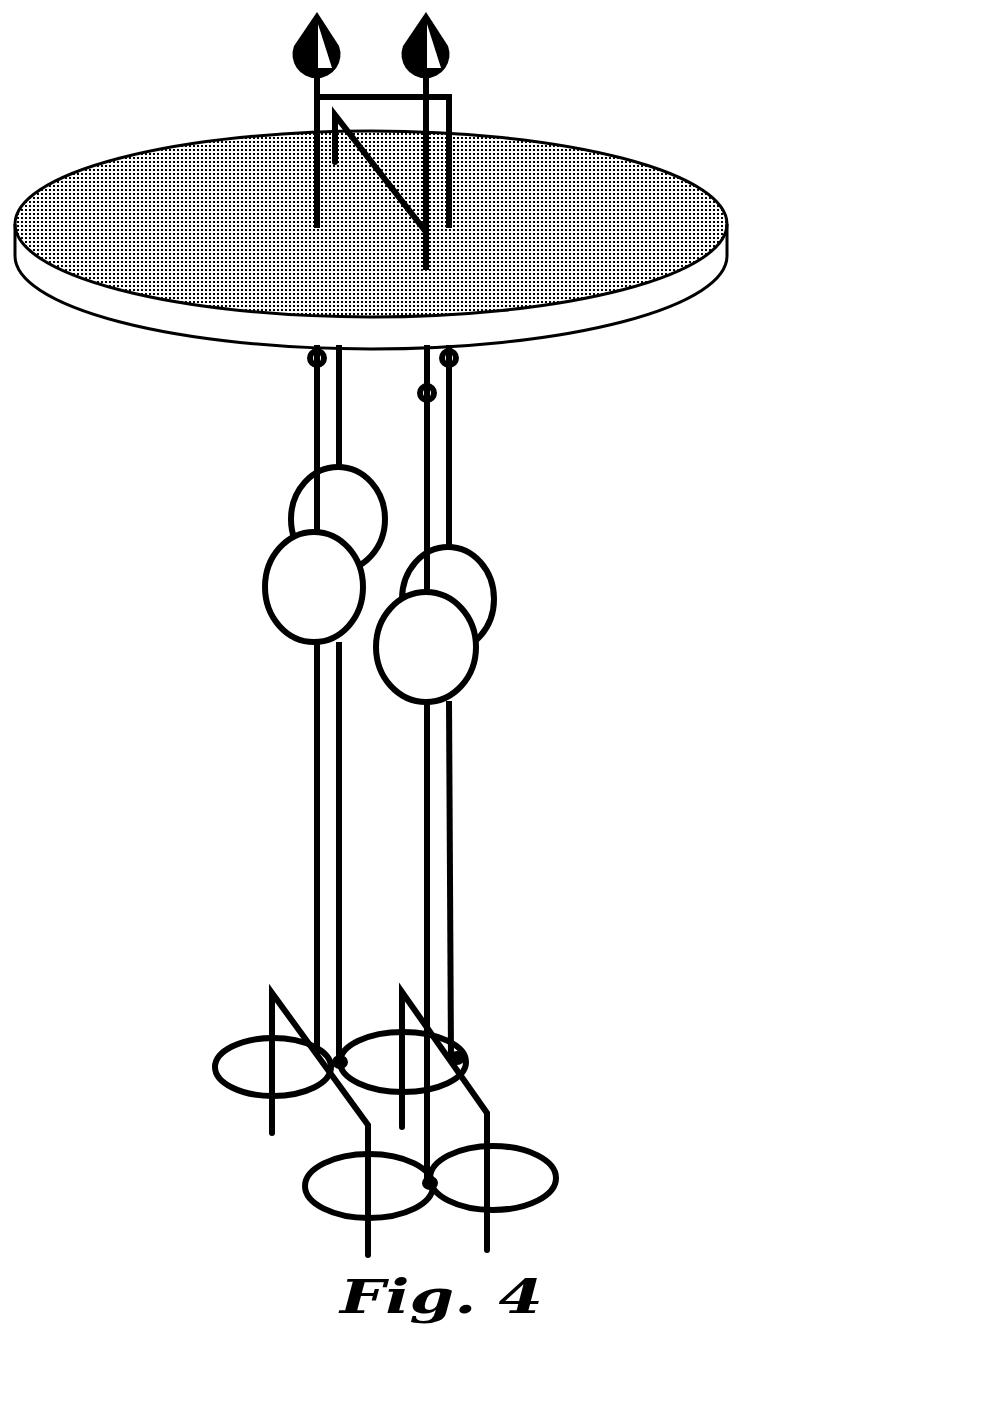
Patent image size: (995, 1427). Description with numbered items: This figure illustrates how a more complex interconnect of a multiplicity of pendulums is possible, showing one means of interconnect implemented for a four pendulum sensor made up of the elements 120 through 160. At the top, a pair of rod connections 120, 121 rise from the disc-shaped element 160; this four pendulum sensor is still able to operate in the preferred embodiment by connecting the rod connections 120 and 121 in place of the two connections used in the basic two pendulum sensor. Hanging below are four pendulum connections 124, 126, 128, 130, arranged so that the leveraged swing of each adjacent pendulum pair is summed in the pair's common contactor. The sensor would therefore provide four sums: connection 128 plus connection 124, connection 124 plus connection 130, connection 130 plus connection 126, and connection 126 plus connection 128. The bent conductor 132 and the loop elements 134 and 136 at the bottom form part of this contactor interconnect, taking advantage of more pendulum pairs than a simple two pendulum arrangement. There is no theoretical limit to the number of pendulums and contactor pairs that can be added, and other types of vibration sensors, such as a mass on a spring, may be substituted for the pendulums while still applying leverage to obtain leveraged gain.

The rod connection 120 is at (283, 62).
The rod connection 121 is at (455, 64).
The interconnect element 160 is at (733, 247).
The pendulum connection 124 is at (308, 787).
The pendulum connection 126 is at (462, 781).
The pendulum connection 128 is at (330, 899).
The pendulum connection 130 is at (435, 869).
The interconnect element 132 is at (497, 1119).
The interconnect element 134 is at (202, 1072).
The interconnect element 136 is at (293, 1191).